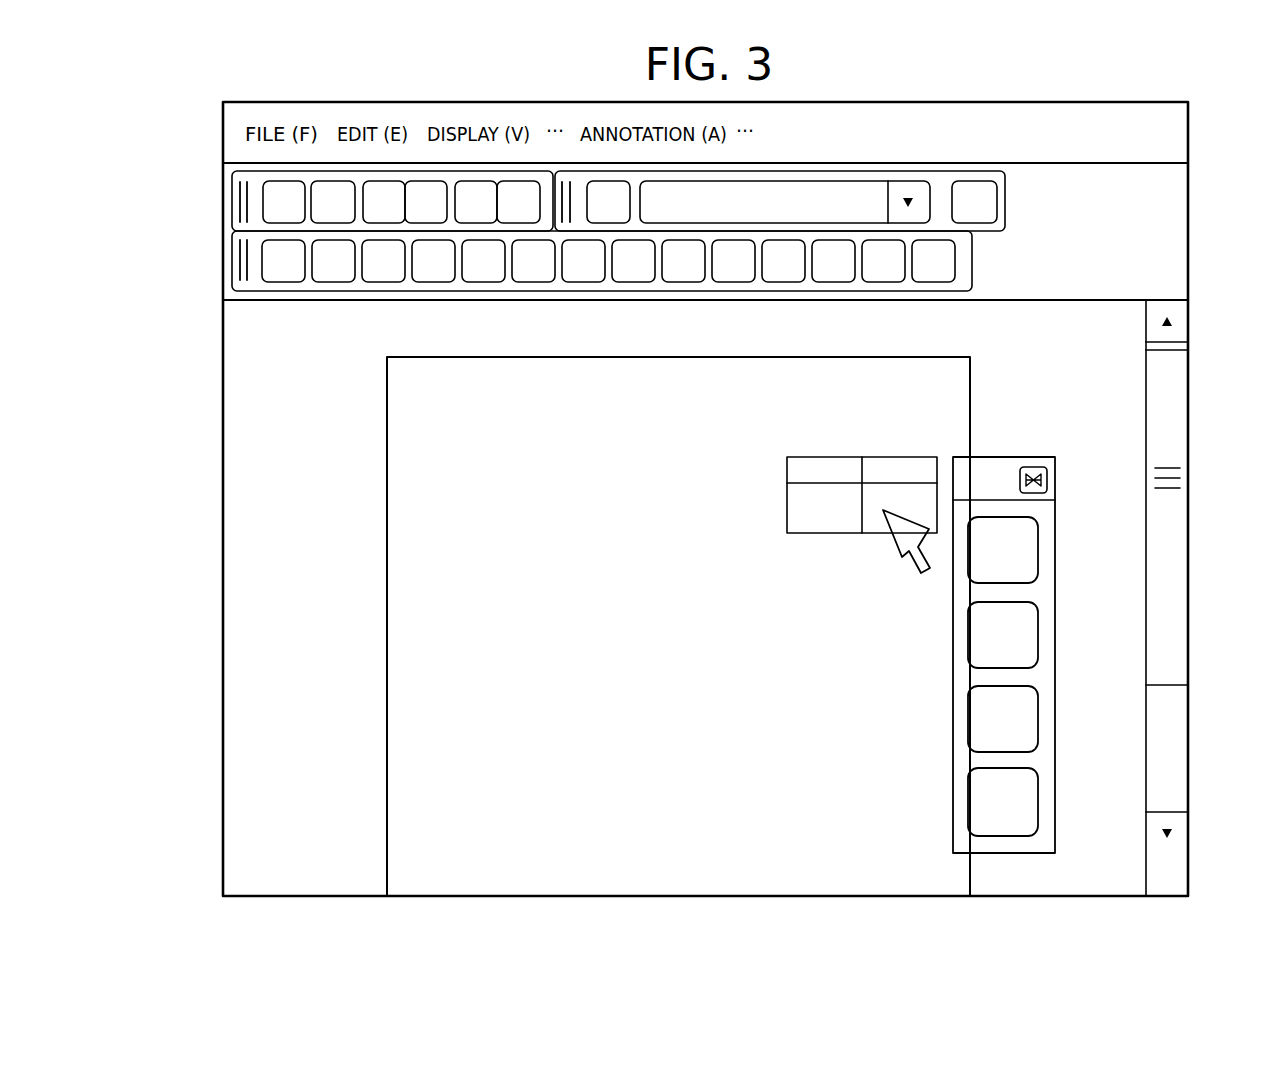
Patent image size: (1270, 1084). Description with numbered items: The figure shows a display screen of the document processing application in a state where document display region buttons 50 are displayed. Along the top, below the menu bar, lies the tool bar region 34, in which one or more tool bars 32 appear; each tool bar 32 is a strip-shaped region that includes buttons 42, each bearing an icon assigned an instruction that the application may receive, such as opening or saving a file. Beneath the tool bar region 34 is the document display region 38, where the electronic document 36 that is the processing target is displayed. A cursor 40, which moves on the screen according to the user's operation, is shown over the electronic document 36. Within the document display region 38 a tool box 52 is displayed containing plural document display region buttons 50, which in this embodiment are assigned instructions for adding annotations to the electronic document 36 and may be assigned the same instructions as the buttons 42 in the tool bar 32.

The tool bar 32 is at (1015, 208).
The tool bar region 34 is at (206, 162).
The electronic document 36 is at (972, 383).
The document display region 38 is at (206, 300).
The cursor 40 is at (910, 527).
The button 42 is at (958, 265).
The document display region button 50 is at (1005, 560).
The tool box 52 is at (916, 697).